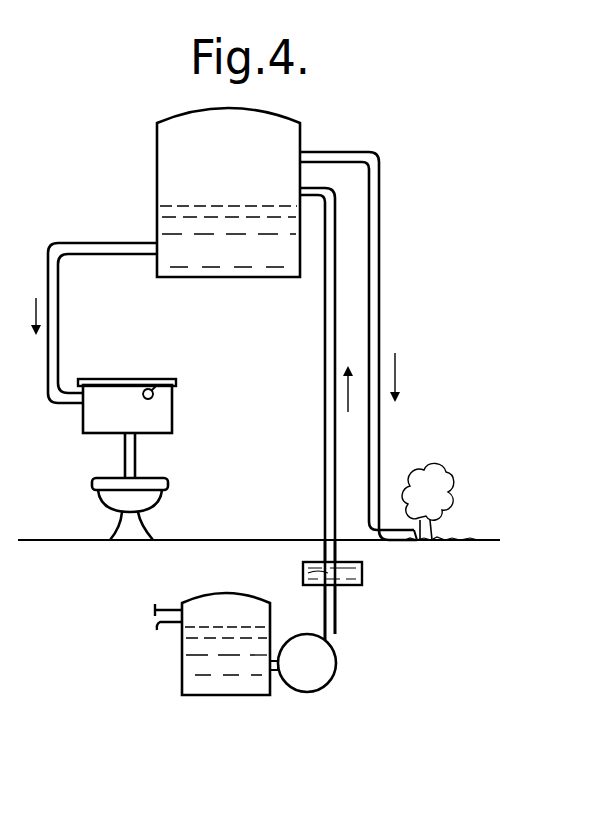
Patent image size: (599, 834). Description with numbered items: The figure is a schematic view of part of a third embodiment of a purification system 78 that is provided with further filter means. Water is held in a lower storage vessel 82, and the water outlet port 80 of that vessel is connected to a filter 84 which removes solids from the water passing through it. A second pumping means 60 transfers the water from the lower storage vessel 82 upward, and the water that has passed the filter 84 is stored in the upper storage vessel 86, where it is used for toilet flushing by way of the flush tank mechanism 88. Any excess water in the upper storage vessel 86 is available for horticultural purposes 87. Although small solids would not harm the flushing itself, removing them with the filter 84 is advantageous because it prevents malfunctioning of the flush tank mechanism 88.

The purification system 78 is at (120, 591).
The water outlet port 80 is at (278, 672).
The lower storage vessel 82 is at (180, 665).
The filter 84 is at (363, 572).
The upper storage vessel 86 is at (157, 157).
The horticultural purposes 87 is at (432, 474).
The flush tank mechanism 88 is at (153, 391).
The second pumping means 60 is at (328, 667).